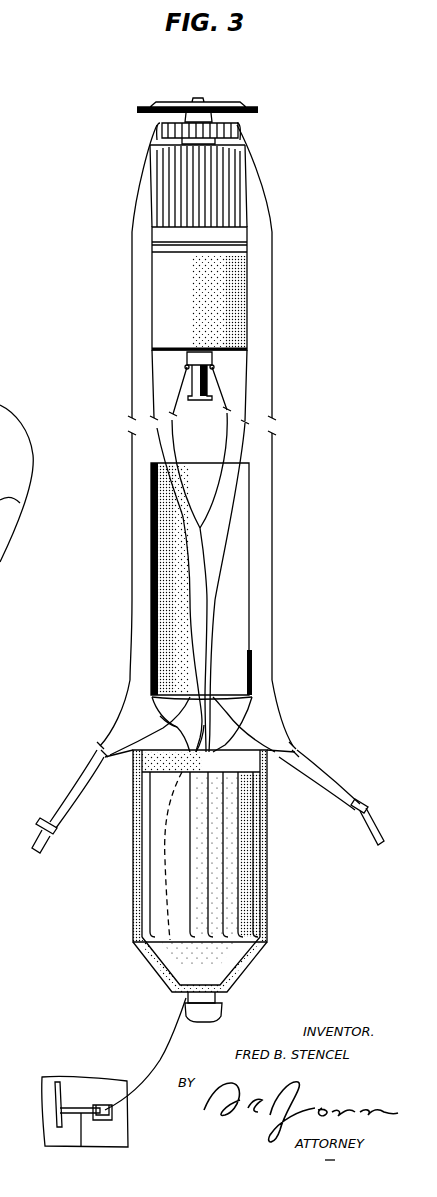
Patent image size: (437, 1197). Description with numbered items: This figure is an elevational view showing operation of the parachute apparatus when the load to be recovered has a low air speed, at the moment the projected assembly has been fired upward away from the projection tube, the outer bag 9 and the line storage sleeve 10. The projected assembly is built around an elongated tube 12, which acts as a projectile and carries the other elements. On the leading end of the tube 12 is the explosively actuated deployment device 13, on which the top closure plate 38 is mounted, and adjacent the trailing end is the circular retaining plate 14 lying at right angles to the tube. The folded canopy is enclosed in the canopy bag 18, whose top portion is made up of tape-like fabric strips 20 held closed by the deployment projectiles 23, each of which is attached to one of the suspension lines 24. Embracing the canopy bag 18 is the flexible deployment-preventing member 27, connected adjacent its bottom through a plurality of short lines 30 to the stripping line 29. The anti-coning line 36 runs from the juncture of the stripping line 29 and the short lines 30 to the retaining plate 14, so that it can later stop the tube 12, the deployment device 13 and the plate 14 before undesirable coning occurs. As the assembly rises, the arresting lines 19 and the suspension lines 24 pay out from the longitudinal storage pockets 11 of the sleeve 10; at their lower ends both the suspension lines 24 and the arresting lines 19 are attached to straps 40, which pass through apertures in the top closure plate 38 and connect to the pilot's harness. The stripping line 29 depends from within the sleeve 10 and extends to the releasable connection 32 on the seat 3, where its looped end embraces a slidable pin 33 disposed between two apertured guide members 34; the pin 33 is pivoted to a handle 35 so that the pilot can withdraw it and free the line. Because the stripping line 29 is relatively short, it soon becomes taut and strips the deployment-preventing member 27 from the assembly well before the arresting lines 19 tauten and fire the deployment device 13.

The seat 3 is at (50, 1138).
The outer bag 9 is at (252, 977).
The line storage sleeve 10 is at (266, 950).
The storage pockets 11 is at (243, 910).
The elongated tube 12 is at (208, 382).
The deployment device 13 is at (155, 149).
The retaining plate 14 is at (208, 352).
The canopy bag 18 is at (250, 290).
The arresting lines 19 is at (300, 758).
The fabric strips 20 is at (218, 201).
The deployment projectiles 23 is at (242, 134).
The suspension lines 24 is at (287, 720).
The deployment-preventing member 27 is at (250, 561).
The stripping line 29 is at (153, 1050).
The short lines 30 is at (161, 716).
The releasable connection 32 is at (97, 1083).
The slidable pin 33 is at (83, 1138).
The guide members 34 is at (114, 1121).
The handle 35 is at (57, 1098).
The anti-coning line 36 is at (200, 726).
The top closure plate 38 is at (248, 108).
The straps 40 is at (38, 844).